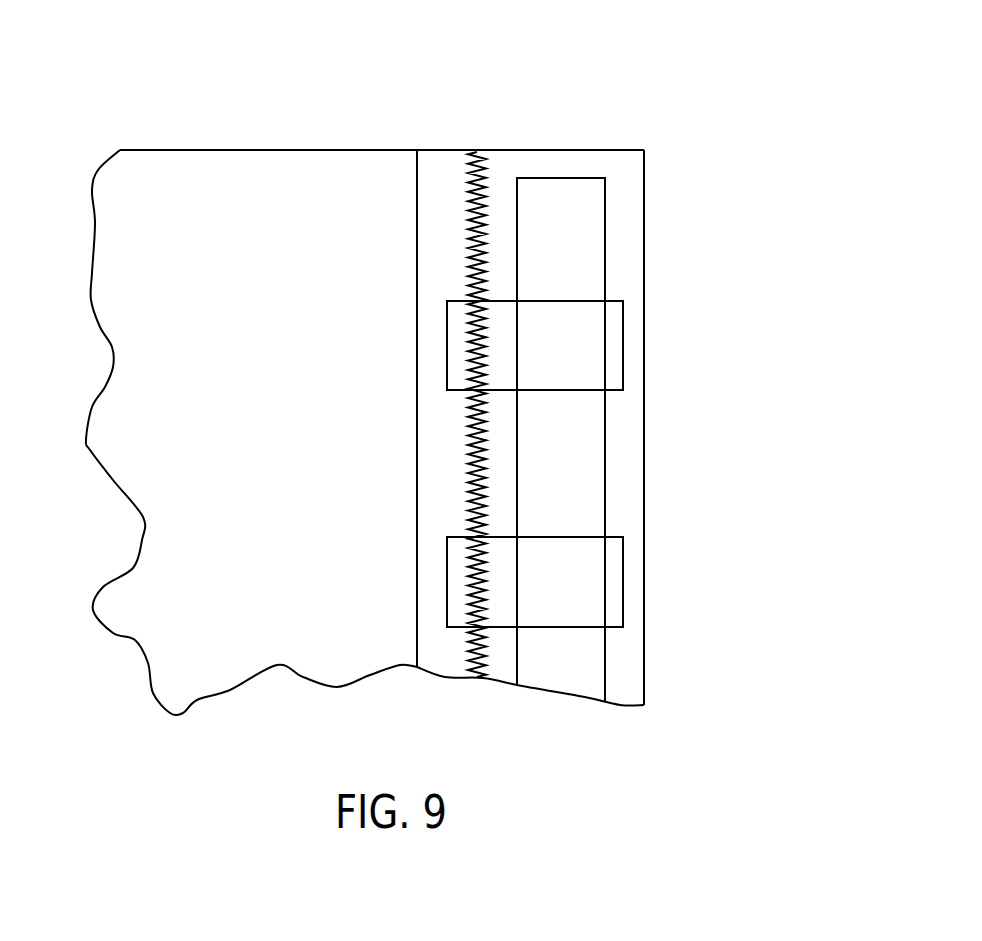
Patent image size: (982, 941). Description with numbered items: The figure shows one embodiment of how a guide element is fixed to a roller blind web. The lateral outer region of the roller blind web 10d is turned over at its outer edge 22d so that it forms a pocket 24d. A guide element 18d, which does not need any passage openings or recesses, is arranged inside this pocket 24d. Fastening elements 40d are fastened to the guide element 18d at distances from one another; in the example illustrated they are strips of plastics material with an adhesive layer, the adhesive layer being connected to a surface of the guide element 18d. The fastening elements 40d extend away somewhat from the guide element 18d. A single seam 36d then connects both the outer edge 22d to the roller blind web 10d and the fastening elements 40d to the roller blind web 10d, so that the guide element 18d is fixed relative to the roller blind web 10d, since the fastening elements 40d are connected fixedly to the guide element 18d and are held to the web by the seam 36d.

The roller blind web 10d is at (237, 148).
The outer edge 22d is at (417, 218).
The pocket 24d is at (510, 122).
The guide element 18d is at (605, 217).
The fastening elements 40d is at (623, 336).
The seam 36d is at (452, 440).